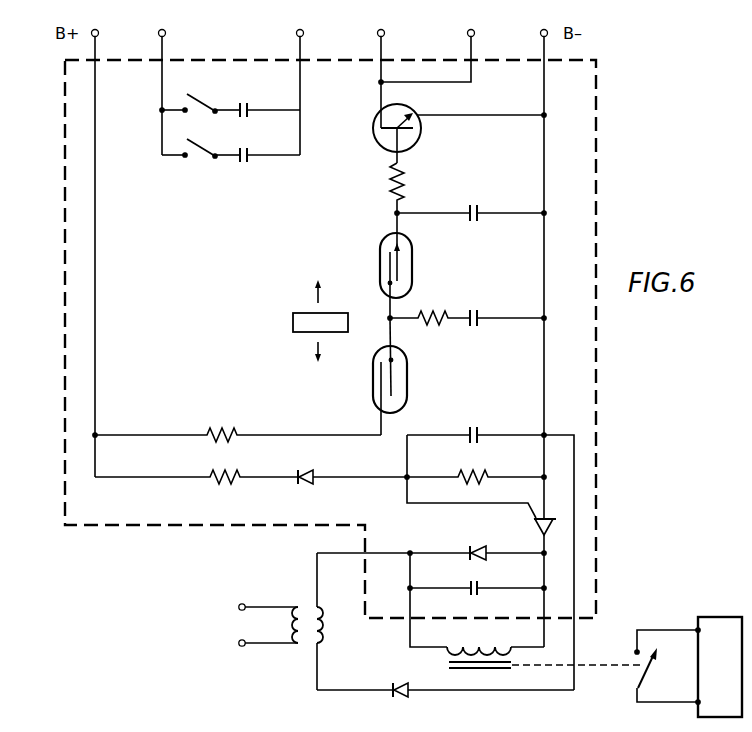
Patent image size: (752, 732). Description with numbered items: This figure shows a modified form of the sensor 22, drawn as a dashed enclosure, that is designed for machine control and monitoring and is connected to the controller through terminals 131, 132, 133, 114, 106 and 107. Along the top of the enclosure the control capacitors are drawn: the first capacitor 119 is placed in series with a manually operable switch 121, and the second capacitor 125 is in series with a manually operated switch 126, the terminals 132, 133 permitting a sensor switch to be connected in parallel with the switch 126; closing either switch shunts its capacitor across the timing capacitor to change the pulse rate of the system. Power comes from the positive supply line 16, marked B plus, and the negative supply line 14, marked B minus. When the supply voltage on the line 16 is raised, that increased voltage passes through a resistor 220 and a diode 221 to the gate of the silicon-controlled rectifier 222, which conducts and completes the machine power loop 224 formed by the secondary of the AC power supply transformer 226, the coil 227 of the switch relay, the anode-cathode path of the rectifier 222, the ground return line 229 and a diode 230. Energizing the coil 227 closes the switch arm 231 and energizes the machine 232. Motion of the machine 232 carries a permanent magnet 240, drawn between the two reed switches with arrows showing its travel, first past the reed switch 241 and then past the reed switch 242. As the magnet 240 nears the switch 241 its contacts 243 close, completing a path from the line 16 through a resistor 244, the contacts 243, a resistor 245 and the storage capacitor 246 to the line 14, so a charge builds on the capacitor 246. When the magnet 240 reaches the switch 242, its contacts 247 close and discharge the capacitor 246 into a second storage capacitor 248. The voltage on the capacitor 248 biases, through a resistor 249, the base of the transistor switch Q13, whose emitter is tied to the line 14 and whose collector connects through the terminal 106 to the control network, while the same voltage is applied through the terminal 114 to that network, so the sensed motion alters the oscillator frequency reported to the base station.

The terminal 131 is at (98, 31).
The terminal 132 is at (165, 31).
The terminal 133 is at (297, 31).
The terminal 114 is at (378, 31).
The terminal 106 is at (469, 31).
The terminal 107 is at (541, 31).
The manually operable switch 121 is at (203, 100).
The first capacitor 119 is at (249, 104).
The manually operated switch 126 is at (202, 150).
The second capacitor 125 is at (247, 160).
The transistor switch Q13 is at (458, 133).
The resistor 249 is at (390, 180).
The second storage capacitor 248 is at (475, 205).
The contacts 247 is at (384, 258).
The reed switch 242 is at (393, 265).
The permanent magnet 240 is at (300, 321).
The resistor 245 is at (432, 315).
The storage capacitor 246 is at (484, 315).
The magnet reed switch 241 is at (388, 376).
The contacts 243 is at (376, 384).
The resistor 244 is at (220, 420).
The resistor 220 is at (215, 481).
The diode 221 is at (306, 482).
The silicon-controlled rectifier 222 is at (533, 522).
The sensor 22 is at (60, 236).
The positive supply line 16 is at (96, 241).
The negative supply line 14 is at (547, 376).
The AC power supply transformer 226 is at (302, 607).
The coil 227 is at (453, 657).
The machine power loop 224 is at (338, 669).
The diode 230 is at (400, 697).
The ground return line 229 is at (556, 690).
The switch arm 231 is at (643, 672).
The machine 232 is at (718, 617).